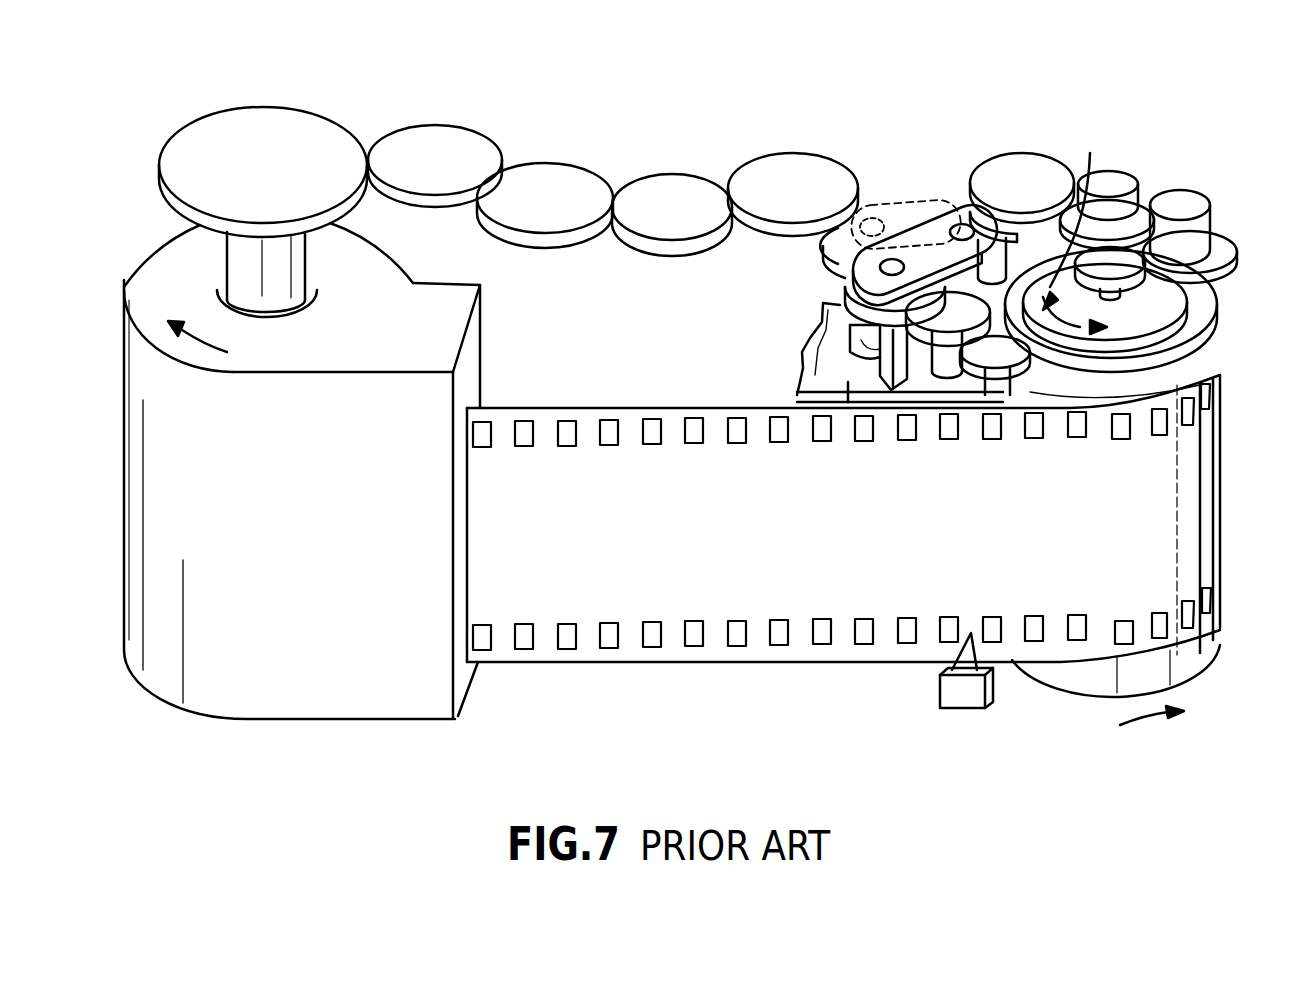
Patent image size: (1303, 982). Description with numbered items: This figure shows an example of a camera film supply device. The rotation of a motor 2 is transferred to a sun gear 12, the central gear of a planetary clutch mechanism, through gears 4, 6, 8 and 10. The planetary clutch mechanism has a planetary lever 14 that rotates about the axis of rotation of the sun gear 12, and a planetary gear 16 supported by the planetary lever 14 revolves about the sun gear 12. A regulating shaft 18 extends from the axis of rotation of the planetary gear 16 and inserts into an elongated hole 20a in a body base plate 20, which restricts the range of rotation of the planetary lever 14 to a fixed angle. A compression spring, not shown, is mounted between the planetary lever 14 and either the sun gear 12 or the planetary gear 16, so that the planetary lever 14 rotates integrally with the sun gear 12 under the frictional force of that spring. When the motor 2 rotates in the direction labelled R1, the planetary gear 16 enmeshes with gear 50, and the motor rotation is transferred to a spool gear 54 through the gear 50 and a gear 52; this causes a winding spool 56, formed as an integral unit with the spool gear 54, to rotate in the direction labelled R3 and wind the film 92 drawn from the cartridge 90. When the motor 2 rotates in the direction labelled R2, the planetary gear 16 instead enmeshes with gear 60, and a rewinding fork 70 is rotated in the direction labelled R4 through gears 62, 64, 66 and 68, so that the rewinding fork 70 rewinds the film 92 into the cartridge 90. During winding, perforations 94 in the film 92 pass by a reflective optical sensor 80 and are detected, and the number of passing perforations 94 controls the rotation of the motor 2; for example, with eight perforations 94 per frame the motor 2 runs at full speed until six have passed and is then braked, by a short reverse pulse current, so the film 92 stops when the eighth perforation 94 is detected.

The motor 2 is at (1177, 297).
The gear 4 is at (1207, 333).
The gear 6 is at (1215, 228).
The gear 8 is at (1142, 198).
The gear 10 is at (1042, 163).
The sun gear 12 is at (1052, 287).
The planetary lever 14 is at (923, 233).
The planetary gear 16 is at (856, 300).
The regulating shaft 18 is at (880, 378).
The body base plate 20 is at (822, 342).
The elongated hole 20a is at (892, 357).
The gear 50 is at (940, 322).
The gear 52 is at (1003, 362).
The spool gear 54 is at (1110, 380).
The winding spool 56 is at (1205, 645).
The gear 60 is at (790, 162).
The gear 62 is at (668, 182).
The gear 64 is at (567, 177).
The gear 66 is at (448, 132).
The gear 68 is at (256, 115).
The rewinding fork 70 is at (273, 293).
The reflective optical sensor 80 is at (950, 693).
The cartridge 90 is at (297, 700).
The film 92 is at (670, 650).
The perforations 94 is at (567, 645).
The direction R1 is at (1096, 320).
The direction R2 is at (1092, 224).
The direction R3 is at (1176, 714).
The direction R4 is at (183, 318).